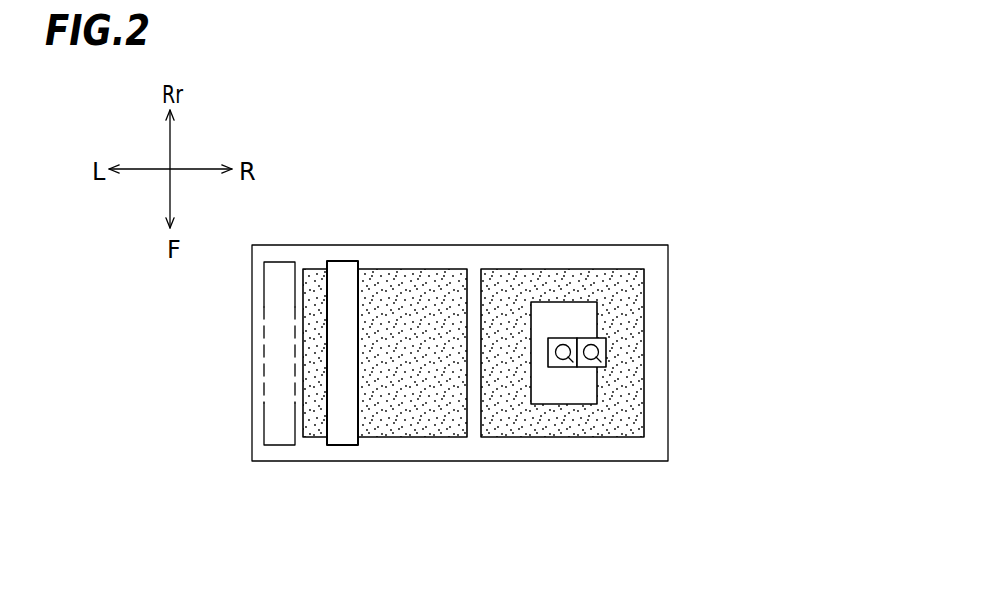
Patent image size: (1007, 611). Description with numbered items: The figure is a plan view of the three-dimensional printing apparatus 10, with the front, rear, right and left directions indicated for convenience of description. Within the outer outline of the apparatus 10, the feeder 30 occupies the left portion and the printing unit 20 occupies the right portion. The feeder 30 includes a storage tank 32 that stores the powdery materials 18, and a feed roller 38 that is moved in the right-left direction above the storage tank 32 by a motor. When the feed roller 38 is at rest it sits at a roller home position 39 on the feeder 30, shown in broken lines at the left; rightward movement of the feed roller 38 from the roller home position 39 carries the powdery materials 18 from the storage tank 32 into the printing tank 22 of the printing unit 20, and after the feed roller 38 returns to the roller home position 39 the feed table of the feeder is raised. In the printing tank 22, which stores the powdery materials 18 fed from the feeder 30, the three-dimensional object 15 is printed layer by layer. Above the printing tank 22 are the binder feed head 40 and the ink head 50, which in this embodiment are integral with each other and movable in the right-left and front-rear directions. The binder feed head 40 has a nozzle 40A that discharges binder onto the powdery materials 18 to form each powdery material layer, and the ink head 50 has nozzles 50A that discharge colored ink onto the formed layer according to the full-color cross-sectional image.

The three-dimensional printing apparatus 10 is at (680, 177).
The three-dimensional object 15 is at (541, 303).
The powdery materials 18 is at (445, 425).
The printing unit 20 is at (602, 380).
The printing tank 22 is at (632, 403).
The feeder 30 is at (369, 371).
The storage tank 32 is at (305, 408).
The feed roller 38 is at (279, 270).
The roller home position 39 is at (275, 452).
The binder feed head 40 is at (562, 338).
The ink head 50 is at (599, 338).
The nozzle 40A is at (567, 367).
The nozzles 50A is at (601, 367).